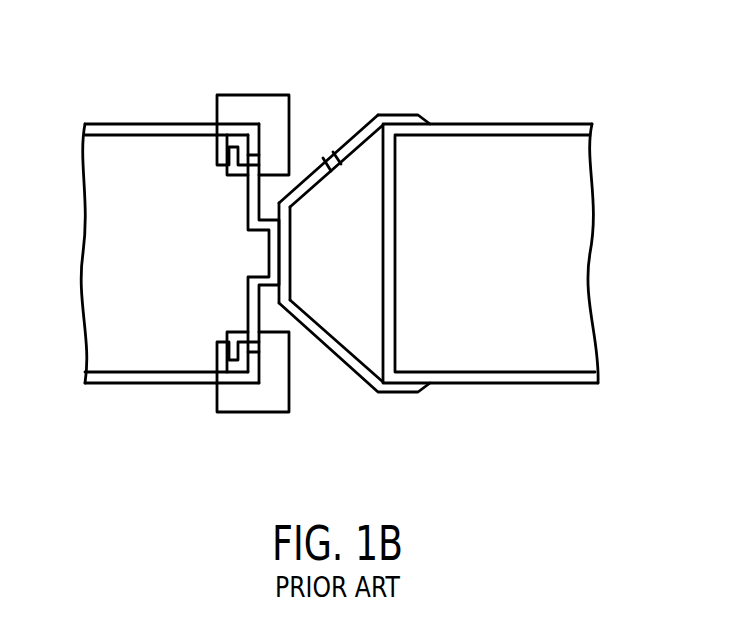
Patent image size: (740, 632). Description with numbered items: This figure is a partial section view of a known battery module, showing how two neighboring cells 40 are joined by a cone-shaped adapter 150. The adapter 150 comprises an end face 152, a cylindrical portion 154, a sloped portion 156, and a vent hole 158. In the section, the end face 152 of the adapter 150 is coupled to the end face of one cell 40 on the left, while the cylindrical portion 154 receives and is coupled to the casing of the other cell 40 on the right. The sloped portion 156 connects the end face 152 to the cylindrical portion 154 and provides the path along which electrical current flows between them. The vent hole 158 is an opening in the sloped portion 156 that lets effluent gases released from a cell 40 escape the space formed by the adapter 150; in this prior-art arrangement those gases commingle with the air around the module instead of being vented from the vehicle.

The cell 40 is at (136, 100).
The cone-shaped adapter 150 is at (364, 263).
The end face 152 is at (283, 248).
The cylindrical portion 154 is at (400, 118).
The sloped portion 156 is at (359, 131).
The vent hole 158 is at (326, 160).